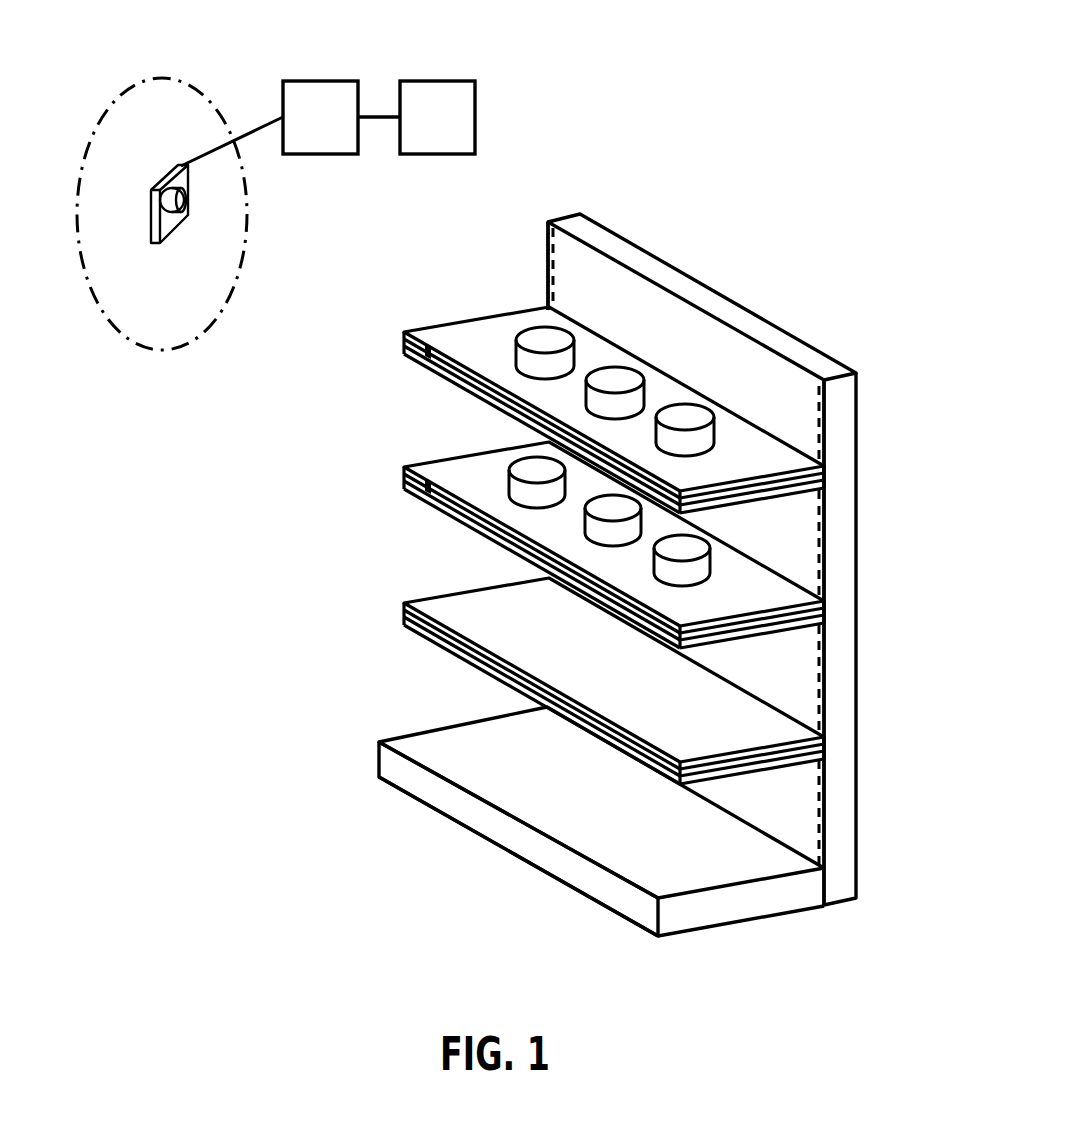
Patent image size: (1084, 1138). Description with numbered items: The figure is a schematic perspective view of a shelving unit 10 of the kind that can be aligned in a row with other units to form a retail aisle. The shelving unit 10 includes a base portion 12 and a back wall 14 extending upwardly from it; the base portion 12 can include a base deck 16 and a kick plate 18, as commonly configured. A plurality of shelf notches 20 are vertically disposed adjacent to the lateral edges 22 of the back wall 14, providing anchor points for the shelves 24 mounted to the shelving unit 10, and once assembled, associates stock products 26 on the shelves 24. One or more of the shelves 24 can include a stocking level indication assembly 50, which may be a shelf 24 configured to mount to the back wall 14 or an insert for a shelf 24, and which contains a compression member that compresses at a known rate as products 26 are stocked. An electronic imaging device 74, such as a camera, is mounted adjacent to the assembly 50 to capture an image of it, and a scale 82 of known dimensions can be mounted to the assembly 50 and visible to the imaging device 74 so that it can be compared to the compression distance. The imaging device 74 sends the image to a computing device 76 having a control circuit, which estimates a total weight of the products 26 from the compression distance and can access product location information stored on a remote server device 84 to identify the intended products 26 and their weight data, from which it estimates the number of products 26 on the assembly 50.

The shelving unit 10 is at (760, 222).
The base portion 12 is at (552, 825).
The back wall 14 is at (778, 338).
The base deck 16 is at (465, 742).
The kick plate 18 is at (417, 784).
The shelf notches 20 is at (556, 255).
The lateral edges 22 is at (548, 252).
The shelves 24 is at (482, 327).
The products 26 is at (545, 337).
The stocking level indication assembly 50 is at (397, 381).
The electronic imaging device 74 is at (160, 243).
The computing device 76 is at (333, 81).
The scale 82 is at (428, 346).
The server device 84 is at (447, 81).